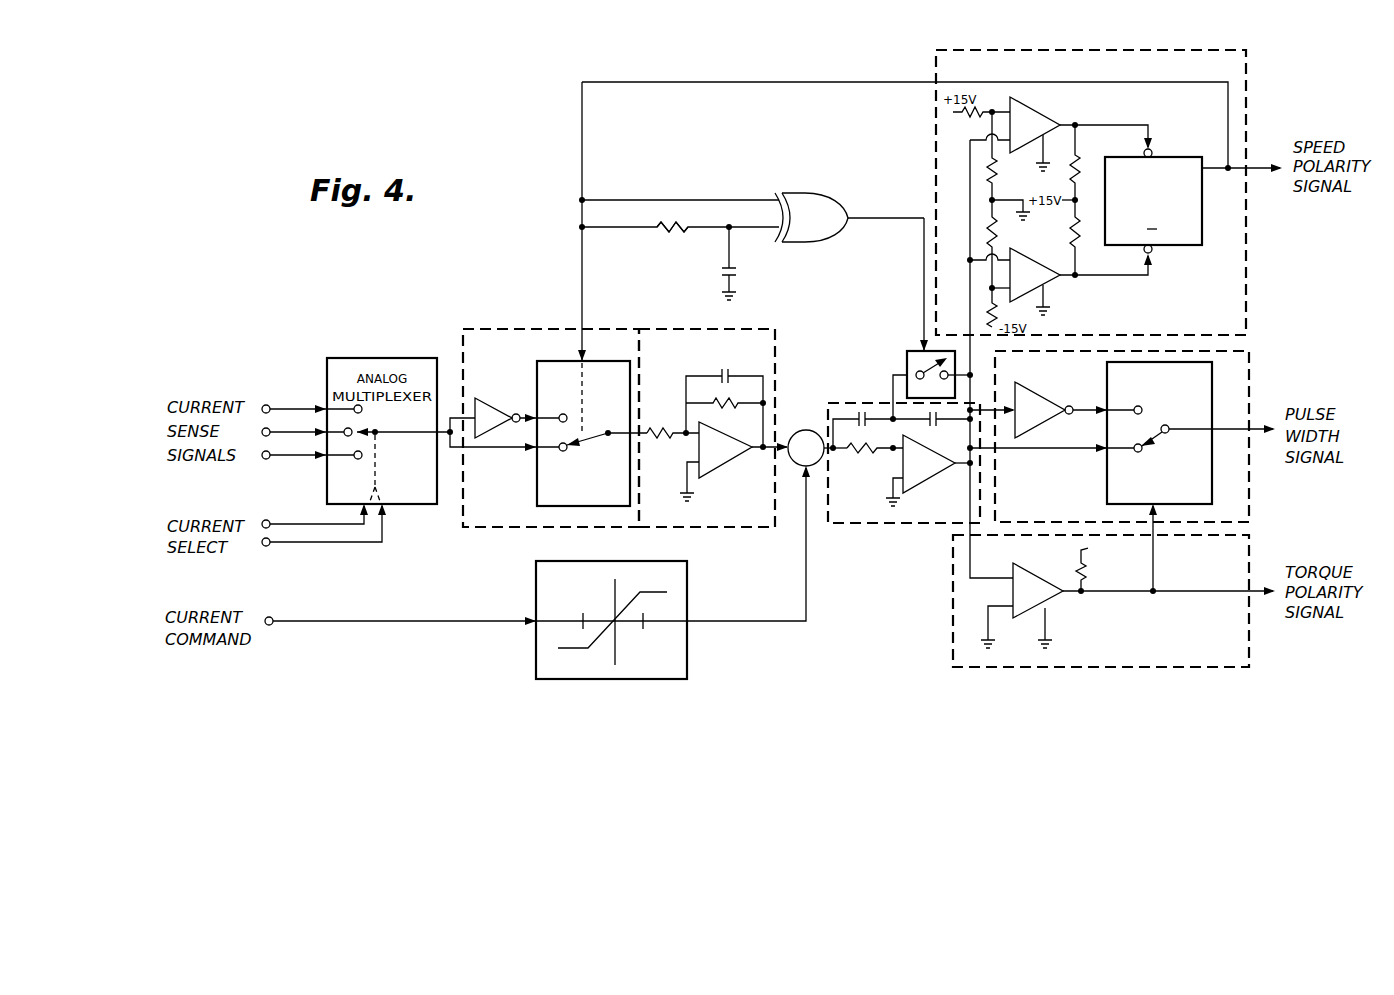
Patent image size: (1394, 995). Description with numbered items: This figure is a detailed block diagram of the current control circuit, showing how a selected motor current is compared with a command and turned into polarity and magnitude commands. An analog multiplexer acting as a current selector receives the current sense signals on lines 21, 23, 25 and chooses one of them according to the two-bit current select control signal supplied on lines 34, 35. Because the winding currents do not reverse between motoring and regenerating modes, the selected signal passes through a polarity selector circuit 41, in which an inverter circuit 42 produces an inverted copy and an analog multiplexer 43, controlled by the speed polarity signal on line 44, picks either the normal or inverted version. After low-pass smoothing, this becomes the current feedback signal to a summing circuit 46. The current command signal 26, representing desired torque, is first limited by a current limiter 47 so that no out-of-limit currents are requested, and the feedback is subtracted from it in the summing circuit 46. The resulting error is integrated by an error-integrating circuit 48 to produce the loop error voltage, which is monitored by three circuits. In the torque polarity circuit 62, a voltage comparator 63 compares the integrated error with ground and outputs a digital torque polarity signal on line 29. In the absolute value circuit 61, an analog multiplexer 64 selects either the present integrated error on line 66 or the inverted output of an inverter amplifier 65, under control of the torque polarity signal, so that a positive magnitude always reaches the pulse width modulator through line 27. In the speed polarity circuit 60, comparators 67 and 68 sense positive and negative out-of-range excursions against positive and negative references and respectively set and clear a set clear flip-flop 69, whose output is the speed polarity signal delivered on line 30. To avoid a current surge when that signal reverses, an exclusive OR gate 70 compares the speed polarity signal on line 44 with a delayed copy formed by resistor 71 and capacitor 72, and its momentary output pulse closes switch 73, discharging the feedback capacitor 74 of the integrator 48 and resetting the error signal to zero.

The current sense signal line 21 is at (281, 407).
The current sense signal line 23 is at (290, 431).
The current sense signal line 25 is at (278, 457).
The current command signal 26 is at (357, 623).
The absolute value output line 27 is at (1257, 428).
The torque polarity output line 29 is at (1258, 590).
The speed polarity output line 30 is at (1257, 166).
The current select control line 34 is at (303, 523).
The current select control line 35 is at (295, 544).
The polarity selector circuit 41 is at (510, 328).
The inverter circuit 42 is at (487, 398).
The analog multiplexer 43 is at (536, 497).
The speed polarity signal line 44 is at (580, 111).
The summing circuit 46 is at (806, 429).
The current limiter 47 is at (771, 329).
The error-integrating circuit 48 is at (855, 524).
The speed polarity circuit 60 is at (1247, 52).
The absolute value circuit 61 is at (1250, 360).
The torque polarity circuit 62 is at (1085, 668).
The voltage comparator 63 is at (1027, 616).
The analog multiplexer 64 is at (1106, 490).
The inverter amplifier 65 is at (1035, 394).
The integrated error signal line 66 is at (1020, 450).
The comparator 67 is at (1045, 107).
The comparator 68 is at (1055, 286).
The set clear flip-flop 69 is at (1180, 156).
The exclusive OR gate 70 is at (802, 192).
The resistor 71 is at (666, 231).
The capacitor 72 is at (722, 277).
The switch 73 is at (906, 358).
The feedback capacitor 74 is at (938, 426).